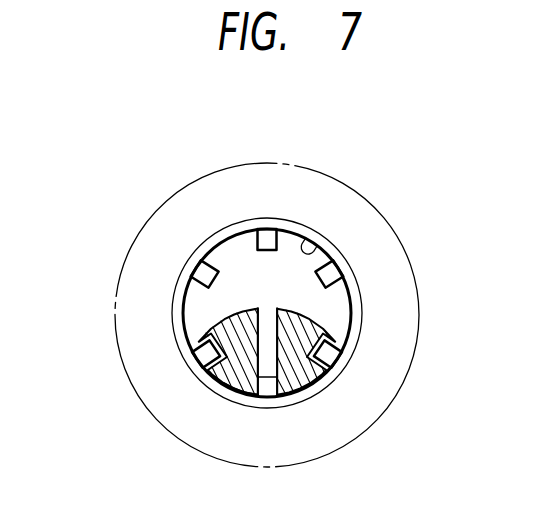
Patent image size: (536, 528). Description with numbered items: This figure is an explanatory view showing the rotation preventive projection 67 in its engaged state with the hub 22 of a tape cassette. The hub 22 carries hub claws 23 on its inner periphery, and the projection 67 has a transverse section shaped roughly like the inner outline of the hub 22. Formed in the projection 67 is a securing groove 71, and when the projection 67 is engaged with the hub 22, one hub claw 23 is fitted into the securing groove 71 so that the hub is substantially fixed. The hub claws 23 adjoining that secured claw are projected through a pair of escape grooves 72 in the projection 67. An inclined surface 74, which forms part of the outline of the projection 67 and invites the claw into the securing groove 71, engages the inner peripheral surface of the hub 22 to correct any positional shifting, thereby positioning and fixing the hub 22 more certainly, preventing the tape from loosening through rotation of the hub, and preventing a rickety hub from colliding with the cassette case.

The hub 22 is at (316, 250).
The hub claw 23 is at (266, 392).
The rotation preventive projection 67 is at (322, 318).
The securing groove 71 is at (268, 310).
The escape groove 72 is at (207, 352).
The inclined surface 74 is at (245, 390).